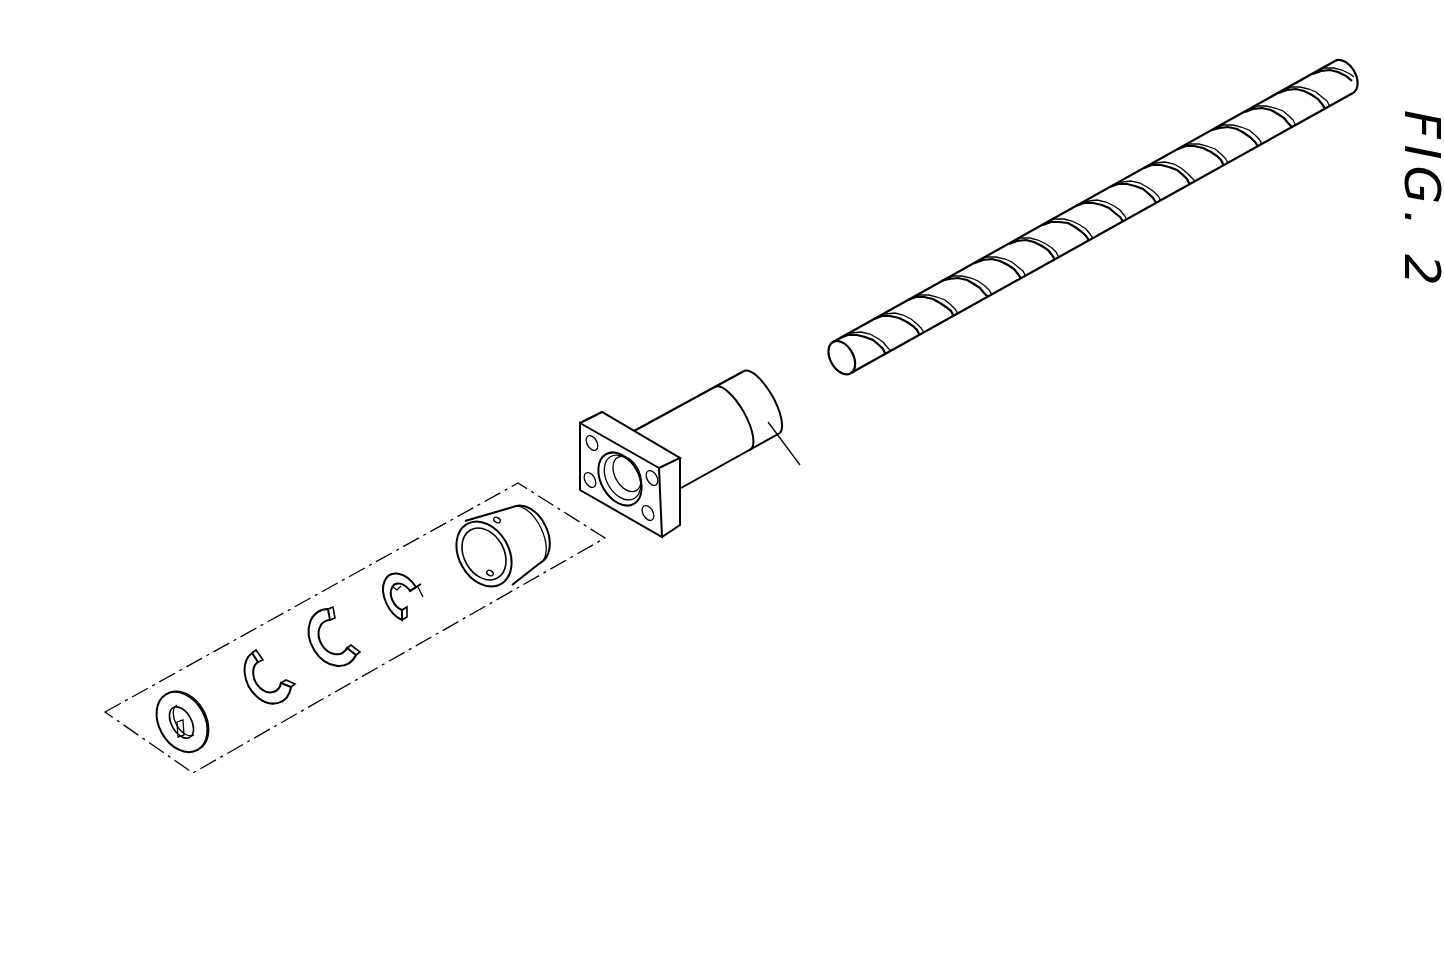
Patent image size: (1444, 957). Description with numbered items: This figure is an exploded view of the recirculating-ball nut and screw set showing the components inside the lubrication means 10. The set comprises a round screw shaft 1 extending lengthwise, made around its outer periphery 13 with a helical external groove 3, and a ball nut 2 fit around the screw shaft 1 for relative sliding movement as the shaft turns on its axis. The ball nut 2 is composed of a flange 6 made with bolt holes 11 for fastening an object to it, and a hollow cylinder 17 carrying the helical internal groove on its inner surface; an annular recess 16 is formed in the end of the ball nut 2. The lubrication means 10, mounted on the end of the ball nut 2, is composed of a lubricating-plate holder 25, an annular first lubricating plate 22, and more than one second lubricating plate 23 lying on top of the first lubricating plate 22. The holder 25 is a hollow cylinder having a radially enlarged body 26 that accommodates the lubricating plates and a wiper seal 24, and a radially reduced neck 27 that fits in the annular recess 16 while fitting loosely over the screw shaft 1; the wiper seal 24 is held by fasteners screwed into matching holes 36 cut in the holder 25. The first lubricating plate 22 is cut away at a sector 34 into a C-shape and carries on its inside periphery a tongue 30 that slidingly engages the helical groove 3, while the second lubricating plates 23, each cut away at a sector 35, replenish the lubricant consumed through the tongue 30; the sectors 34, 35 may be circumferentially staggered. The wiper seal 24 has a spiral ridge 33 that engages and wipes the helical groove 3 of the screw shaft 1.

The screw shaft 1 is at (1112, 203).
The helical external groove 3 is at (1030, 248).
The outer periphery 13 is at (1183, 170).
The ball nut 2 is at (592, 474).
The hollow cylinder 17 is at (718, 452).
The lubricating-plate holder 25 is at (754, 384).
The bolt holes 11 is at (580, 430).
The flange 6 is at (672, 500).
The annular recess 16 is at (620, 498).
The lubrication means 10 is at (768, 422).
The radially enlarged body 26 is at (505, 540).
The radially reduced neck 27 is at (531, 515).
The matching holes 36 is at (495, 518).
The first lubricating plate 22 is at (448, 648).
The tongue 30 is at (408, 593).
The sector 34 is at (423, 597).
The second lubricating plate 23 is at (313, 620).
The sector 35 is at (360, 652).
The wiper seal 24 is at (194, 744).
The spiral ridge 33 is at (178, 724).